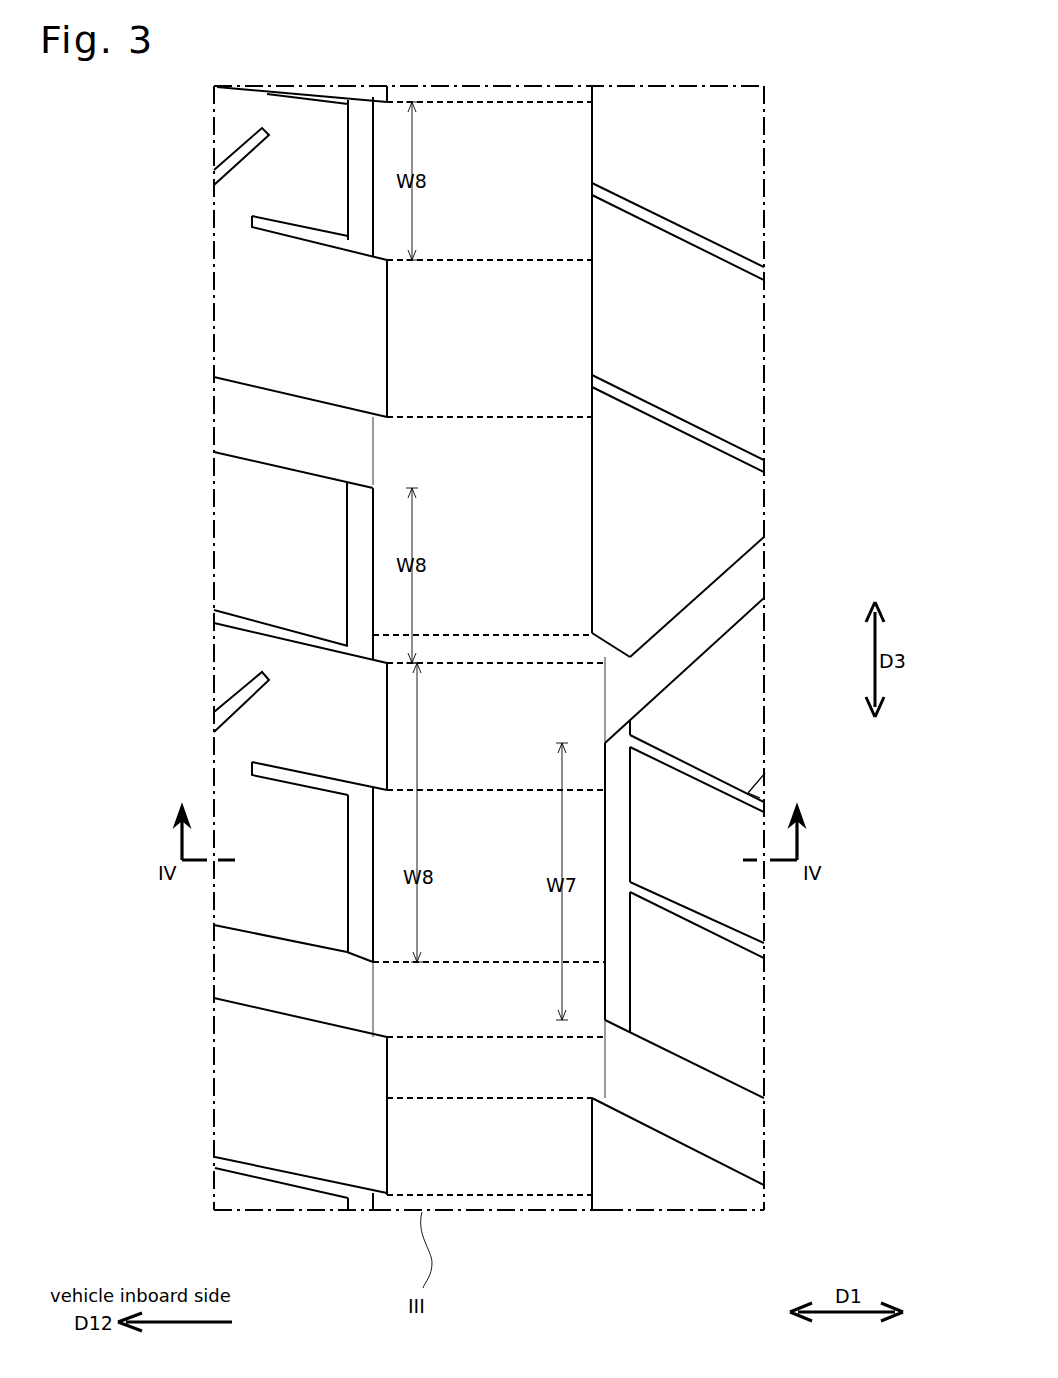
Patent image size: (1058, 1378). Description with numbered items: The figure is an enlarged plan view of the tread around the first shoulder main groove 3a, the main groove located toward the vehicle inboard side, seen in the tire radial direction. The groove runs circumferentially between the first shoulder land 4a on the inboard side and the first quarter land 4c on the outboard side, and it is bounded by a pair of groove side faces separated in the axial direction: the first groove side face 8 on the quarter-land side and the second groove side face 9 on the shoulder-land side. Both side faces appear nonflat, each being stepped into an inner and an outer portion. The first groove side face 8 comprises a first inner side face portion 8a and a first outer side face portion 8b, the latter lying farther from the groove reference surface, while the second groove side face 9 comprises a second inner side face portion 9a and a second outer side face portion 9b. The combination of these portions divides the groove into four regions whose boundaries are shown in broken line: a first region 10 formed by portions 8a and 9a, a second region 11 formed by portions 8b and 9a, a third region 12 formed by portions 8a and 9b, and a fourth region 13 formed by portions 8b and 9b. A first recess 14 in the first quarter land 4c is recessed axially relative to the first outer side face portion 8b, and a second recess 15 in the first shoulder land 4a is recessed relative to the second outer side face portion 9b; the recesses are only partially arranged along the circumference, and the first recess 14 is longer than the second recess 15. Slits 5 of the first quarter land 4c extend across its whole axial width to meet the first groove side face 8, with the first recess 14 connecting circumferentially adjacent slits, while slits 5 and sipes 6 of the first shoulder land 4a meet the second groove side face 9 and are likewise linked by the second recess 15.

The first shoulder main groove 3a is at (513, 1212).
The first shoulder land 4a is at (258, 1202).
The first quarter land 4c is at (698, 1212).
The slit 5 is at (214, 418).
The sipe 6 is at (252, 112).
The first groove side face 8 is at (577, 478).
The first inner side face portion 8a is at (592, 322).
The first outer side face portion 8b is at (605, 856).
The second groove side face 9 is at (402, 388).
The second inner side face portion 9a is at (383, 327).
The second outer side face portion 9b is at (367, 156).
The first region 10 is at (497, 342).
The second region 11 is at (497, 745).
The third region 12 is at (497, 189).
The fourth region 13 is at (497, 659).
The first recess 14 is at (600, 960).
The second recess 15 is at (380, 183).